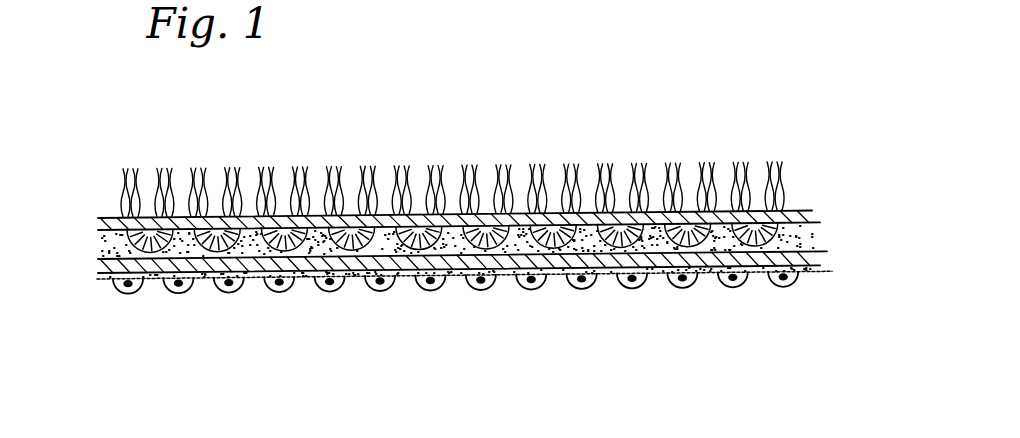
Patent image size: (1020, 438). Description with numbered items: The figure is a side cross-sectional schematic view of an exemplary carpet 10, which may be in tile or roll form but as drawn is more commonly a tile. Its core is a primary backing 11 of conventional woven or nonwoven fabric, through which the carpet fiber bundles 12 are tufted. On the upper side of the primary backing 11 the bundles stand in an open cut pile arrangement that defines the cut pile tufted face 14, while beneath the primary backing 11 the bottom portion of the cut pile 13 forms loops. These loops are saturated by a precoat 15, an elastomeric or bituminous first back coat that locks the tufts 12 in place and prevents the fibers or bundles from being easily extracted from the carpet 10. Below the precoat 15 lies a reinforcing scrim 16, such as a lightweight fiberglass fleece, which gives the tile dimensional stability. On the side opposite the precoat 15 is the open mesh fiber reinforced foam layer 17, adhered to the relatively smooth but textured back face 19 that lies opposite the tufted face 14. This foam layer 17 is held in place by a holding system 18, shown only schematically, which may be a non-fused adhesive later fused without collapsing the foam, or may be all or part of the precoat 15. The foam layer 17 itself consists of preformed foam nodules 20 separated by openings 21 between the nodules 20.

The carpet 10 is at (705, 88).
The primary backing 11 is at (90, 222).
The carpet fiber bundles 12 is at (773, 158).
The bottom portion of the cut pile 13 is at (812, 212).
The cut pile tufted face 14 is at (430, 158).
The precoat 15 is at (812, 236).
The reinforcing scrim 16 is at (90, 265).
The open mesh fiber reinforced foam layer 17 is at (130, 306).
The holding system 18 is at (832, 275).
The back face 19 is at (257, 262).
The foam nodules 20 is at (383, 292).
The openings 21 is at (460, 292).